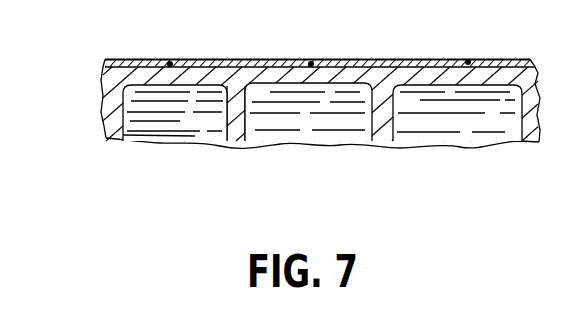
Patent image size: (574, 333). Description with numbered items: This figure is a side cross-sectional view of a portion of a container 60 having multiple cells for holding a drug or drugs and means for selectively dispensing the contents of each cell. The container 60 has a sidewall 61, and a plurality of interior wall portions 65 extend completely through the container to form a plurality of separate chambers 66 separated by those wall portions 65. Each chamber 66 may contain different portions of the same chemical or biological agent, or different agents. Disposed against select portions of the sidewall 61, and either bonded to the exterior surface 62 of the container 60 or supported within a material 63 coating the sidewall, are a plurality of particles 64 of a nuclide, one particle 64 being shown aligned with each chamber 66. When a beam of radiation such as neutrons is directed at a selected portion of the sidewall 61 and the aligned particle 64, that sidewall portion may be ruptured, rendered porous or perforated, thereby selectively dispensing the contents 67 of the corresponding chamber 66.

The container 60 is at (176, 42).
The sidewall 61 is at (492, 72).
The exterior surface 62 is at (516, 62).
The material 63 is at (373, 66).
The particles of a nuclide 64 is at (170, 64).
The interior wall portions 65 is at (235, 117).
The chambers 66 is at (202, 115).
The contents 67 is at (413, 110).